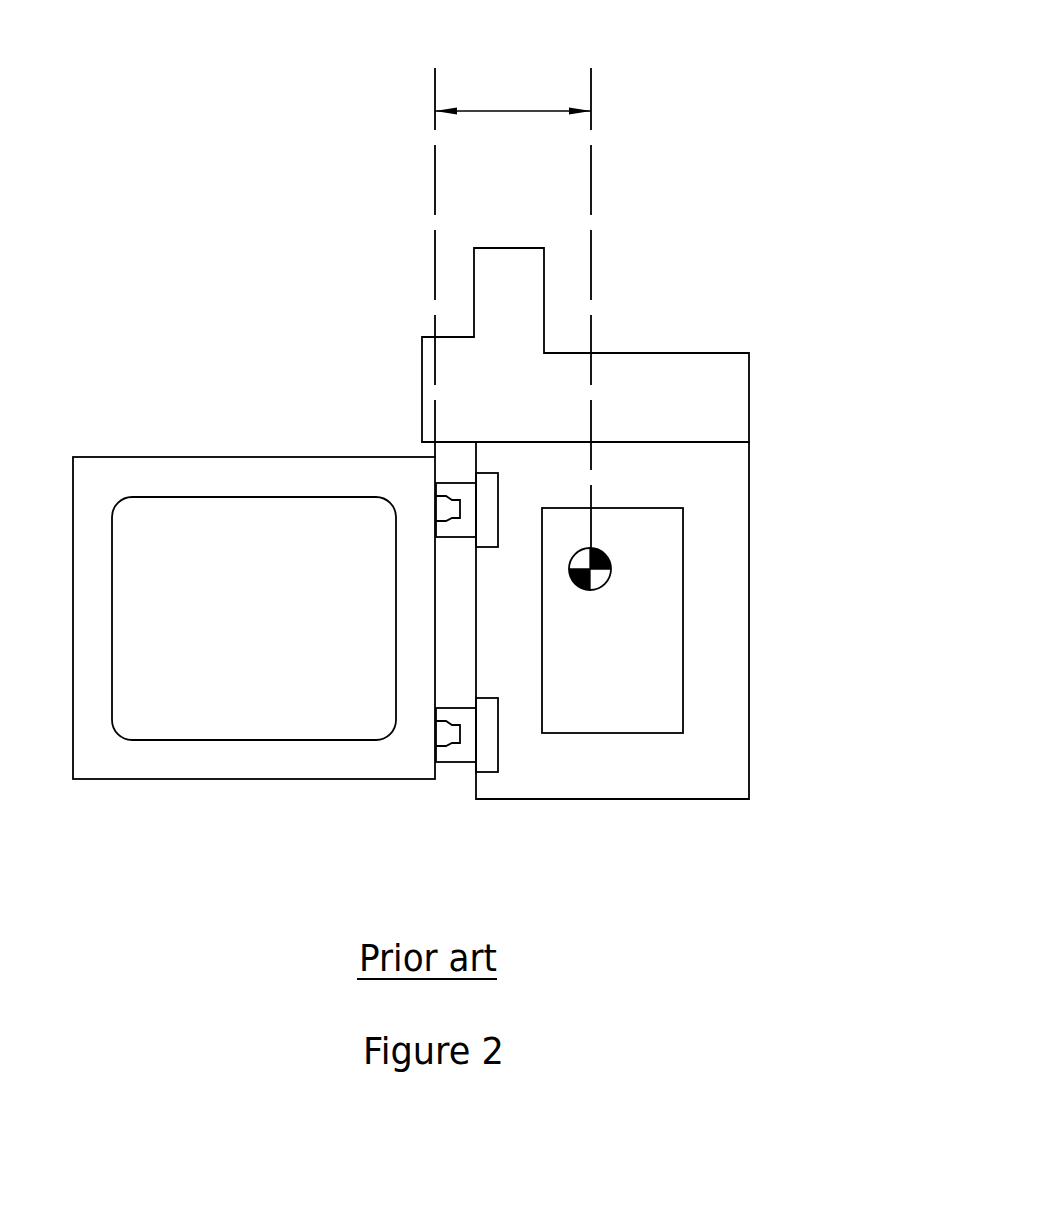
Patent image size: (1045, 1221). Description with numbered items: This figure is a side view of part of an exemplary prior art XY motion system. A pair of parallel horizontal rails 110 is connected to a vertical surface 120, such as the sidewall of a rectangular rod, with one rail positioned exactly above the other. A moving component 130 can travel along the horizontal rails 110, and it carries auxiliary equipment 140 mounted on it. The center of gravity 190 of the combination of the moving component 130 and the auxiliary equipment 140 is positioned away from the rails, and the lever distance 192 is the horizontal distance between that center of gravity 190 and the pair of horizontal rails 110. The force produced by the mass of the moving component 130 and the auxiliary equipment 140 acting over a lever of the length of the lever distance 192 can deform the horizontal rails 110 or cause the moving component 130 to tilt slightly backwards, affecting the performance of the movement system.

The horizontal rails 110 is at (438, 488).
The vertical surface 120 is at (396, 638).
The moving component 130 is at (637, 787).
The auxiliary equipment 140 is at (737, 395).
The center of gravity 190 is at (611, 573).
The lever distance 192 is at (507, 107).